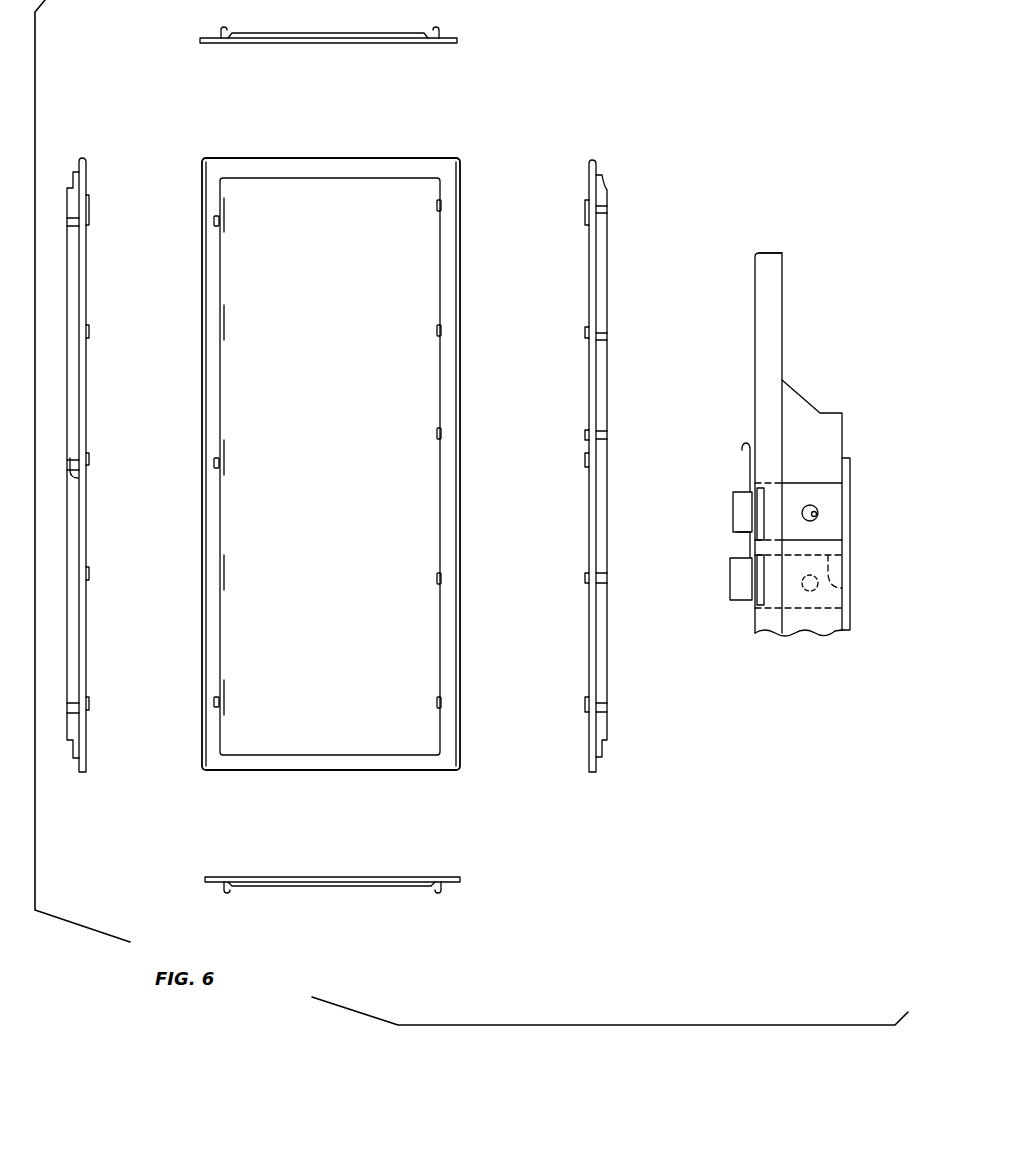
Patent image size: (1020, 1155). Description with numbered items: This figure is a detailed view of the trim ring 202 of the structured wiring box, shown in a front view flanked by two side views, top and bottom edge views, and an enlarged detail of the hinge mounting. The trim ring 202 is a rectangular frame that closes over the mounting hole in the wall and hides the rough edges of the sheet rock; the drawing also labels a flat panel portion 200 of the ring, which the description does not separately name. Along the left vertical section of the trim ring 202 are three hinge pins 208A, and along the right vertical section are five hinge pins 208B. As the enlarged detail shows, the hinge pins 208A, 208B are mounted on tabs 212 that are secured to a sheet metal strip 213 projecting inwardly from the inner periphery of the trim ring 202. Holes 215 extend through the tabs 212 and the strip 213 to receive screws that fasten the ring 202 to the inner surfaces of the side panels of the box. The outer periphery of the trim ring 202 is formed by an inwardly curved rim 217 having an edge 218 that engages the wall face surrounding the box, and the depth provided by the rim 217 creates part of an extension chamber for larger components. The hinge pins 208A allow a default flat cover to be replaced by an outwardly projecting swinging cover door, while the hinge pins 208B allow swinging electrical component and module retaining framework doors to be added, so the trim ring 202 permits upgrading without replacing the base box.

The panel 200 is at (358, 46).
The trim ring 202 is at (232, 44).
The hinge pins 208A is at (219, 222).
The hinge pins 208B is at (437, 206).
The tabs 212 is at (70, 460).
The sheet metal strip 213 is at (75, 397).
The holes 215 is at (818, 512).
The inwardly curved rim 217 is at (770, 253).
The edge 218 is at (782, 257).